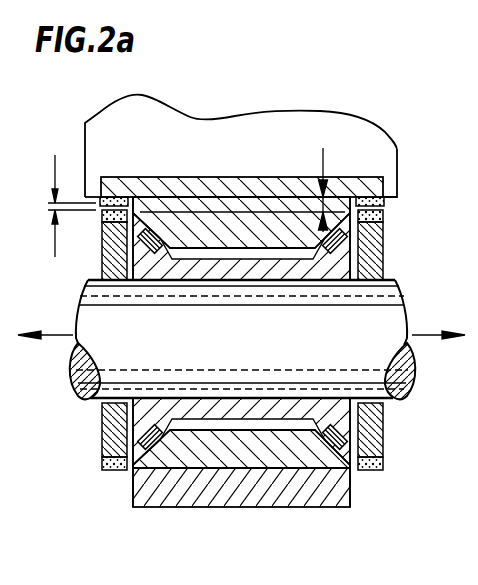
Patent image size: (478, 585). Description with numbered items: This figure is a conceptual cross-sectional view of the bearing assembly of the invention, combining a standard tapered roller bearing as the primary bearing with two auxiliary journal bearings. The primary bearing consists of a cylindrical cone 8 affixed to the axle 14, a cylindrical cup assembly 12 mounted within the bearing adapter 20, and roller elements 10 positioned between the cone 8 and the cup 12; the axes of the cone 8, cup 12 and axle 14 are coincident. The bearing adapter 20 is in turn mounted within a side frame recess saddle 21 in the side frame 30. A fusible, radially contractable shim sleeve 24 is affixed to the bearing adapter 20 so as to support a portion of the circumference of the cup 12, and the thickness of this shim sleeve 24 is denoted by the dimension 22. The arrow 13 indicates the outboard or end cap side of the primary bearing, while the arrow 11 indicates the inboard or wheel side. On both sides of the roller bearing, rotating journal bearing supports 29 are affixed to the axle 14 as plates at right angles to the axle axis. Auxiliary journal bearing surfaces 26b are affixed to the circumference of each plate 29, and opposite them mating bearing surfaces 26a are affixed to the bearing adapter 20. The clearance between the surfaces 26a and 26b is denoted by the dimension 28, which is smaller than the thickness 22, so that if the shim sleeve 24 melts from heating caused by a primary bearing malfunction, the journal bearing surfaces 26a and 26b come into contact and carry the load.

The cone 8 is at (320, 273).
The roller elements 10 is at (153, 252).
The arrow indicating inboard side 11 is at (414, 334).
The cup assembly 12 is at (245, 222).
The arrow indicating outboard side 13 is at (72, 334).
The axle 14 is at (117, 380).
The bearing adapter 20 is at (286, 197).
The side frame recess saddle 21 is at (178, 177).
The thickness of fusible shim sleeve 22 is at (338, 205).
The fusible shim sleeve 24 is at (194, 211).
The mating bearing surfaces 26a is at (100, 196).
The auxiliary journal bearing surfaces 26b is at (104, 216).
The clearance between journal bearing surfaces 28 is at (48, 207).
The rotating journal bearing supports 29 is at (104, 262).
The side frame 30 is at (268, 120).